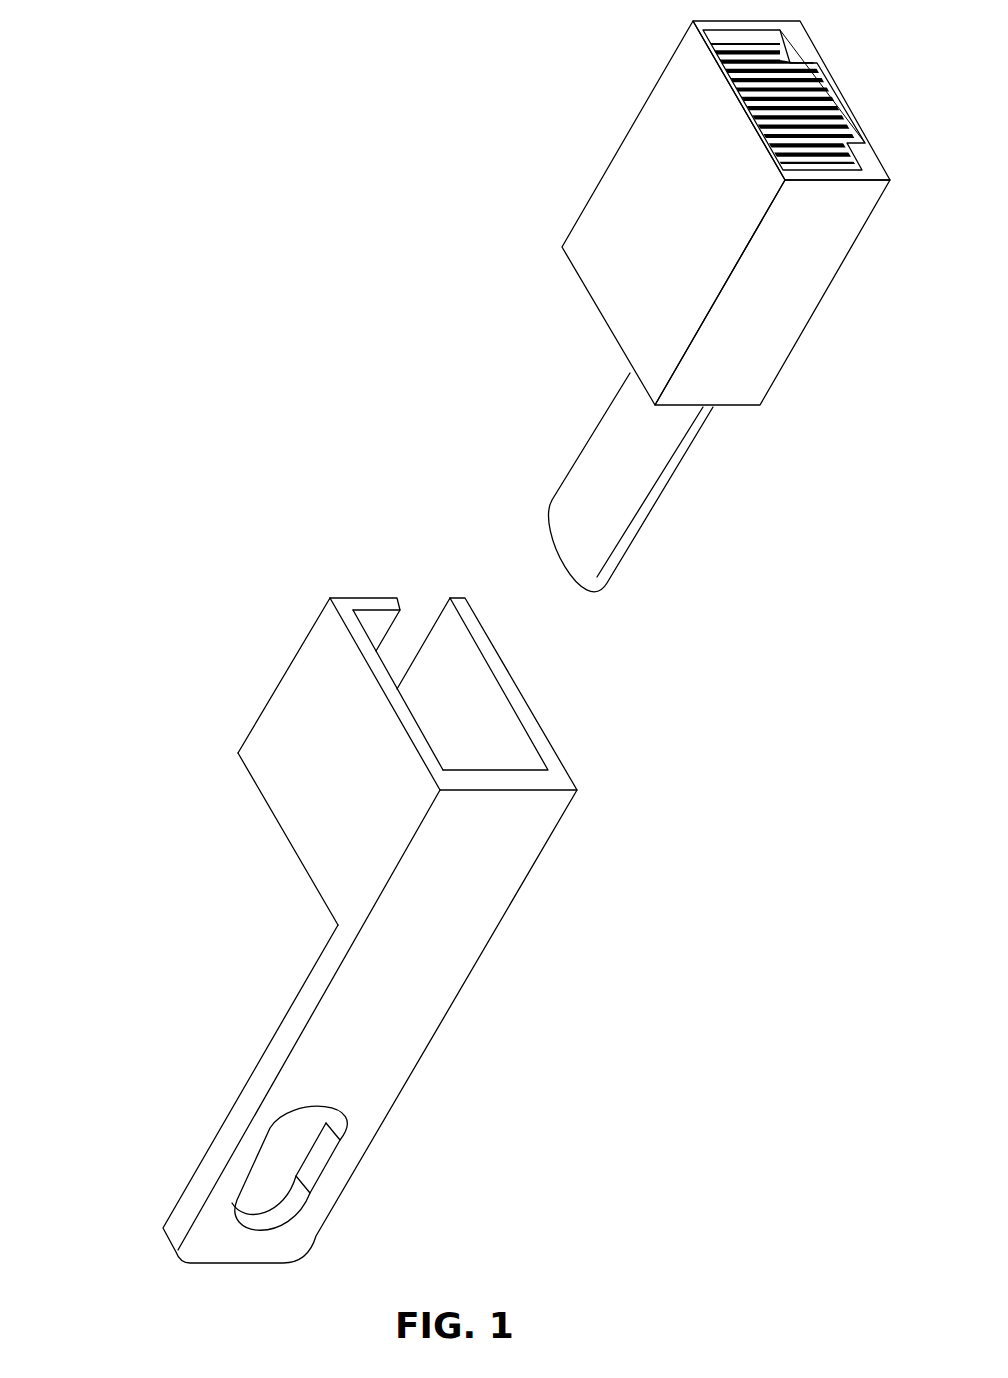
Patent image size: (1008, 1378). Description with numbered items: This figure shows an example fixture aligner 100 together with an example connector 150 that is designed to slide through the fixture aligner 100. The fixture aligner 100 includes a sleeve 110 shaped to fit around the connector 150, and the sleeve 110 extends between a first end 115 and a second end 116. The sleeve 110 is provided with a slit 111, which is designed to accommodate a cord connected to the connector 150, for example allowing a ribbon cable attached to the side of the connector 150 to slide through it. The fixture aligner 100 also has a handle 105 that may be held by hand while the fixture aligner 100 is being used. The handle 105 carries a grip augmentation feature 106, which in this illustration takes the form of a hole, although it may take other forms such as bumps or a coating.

The fixture aligner 100 is at (185, 535).
The handle 105 is at (275, 1028).
The grip augmentation feature 106 is at (243, 1180).
The sleeve 110 is at (292, 668).
The slit 111 is at (398, 606).
The first end 115 is at (297, 850).
The second end 116 is at (533, 777).
The connector 150 is at (470, 238).